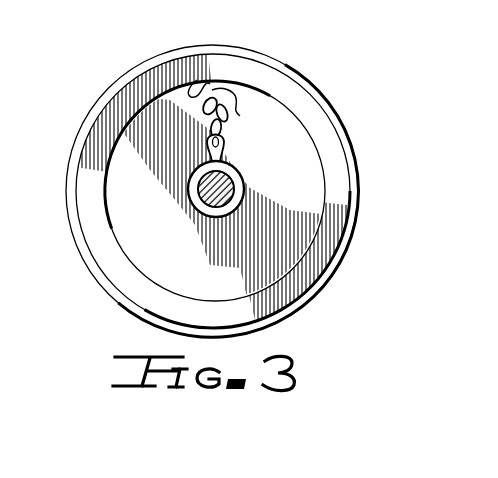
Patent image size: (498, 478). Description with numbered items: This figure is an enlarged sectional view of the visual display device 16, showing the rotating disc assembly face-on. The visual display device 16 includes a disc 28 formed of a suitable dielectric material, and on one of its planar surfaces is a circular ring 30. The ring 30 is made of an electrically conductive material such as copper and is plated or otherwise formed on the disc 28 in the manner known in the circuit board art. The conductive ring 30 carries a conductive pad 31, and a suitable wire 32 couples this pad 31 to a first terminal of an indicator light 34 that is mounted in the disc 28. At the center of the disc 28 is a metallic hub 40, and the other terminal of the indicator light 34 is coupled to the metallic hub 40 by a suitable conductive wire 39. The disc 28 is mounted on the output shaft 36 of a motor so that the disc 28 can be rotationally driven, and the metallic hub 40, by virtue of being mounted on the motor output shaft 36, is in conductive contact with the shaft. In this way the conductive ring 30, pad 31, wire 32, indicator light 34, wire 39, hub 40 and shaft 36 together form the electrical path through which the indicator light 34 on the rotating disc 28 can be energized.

The visual display device 16 is at (326, 70).
The disc 28 is at (352, 137).
The circular ring 30 is at (108, 247).
The conductive pad 31 is at (209, 182).
The wire 32 is at (208, 82).
The indicator light 34 is at (230, 100).
The output shaft 36 is at (205, 194).
The conductive wire 39 is at (230, 130).
The metallic hub 40 is at (238, 184).